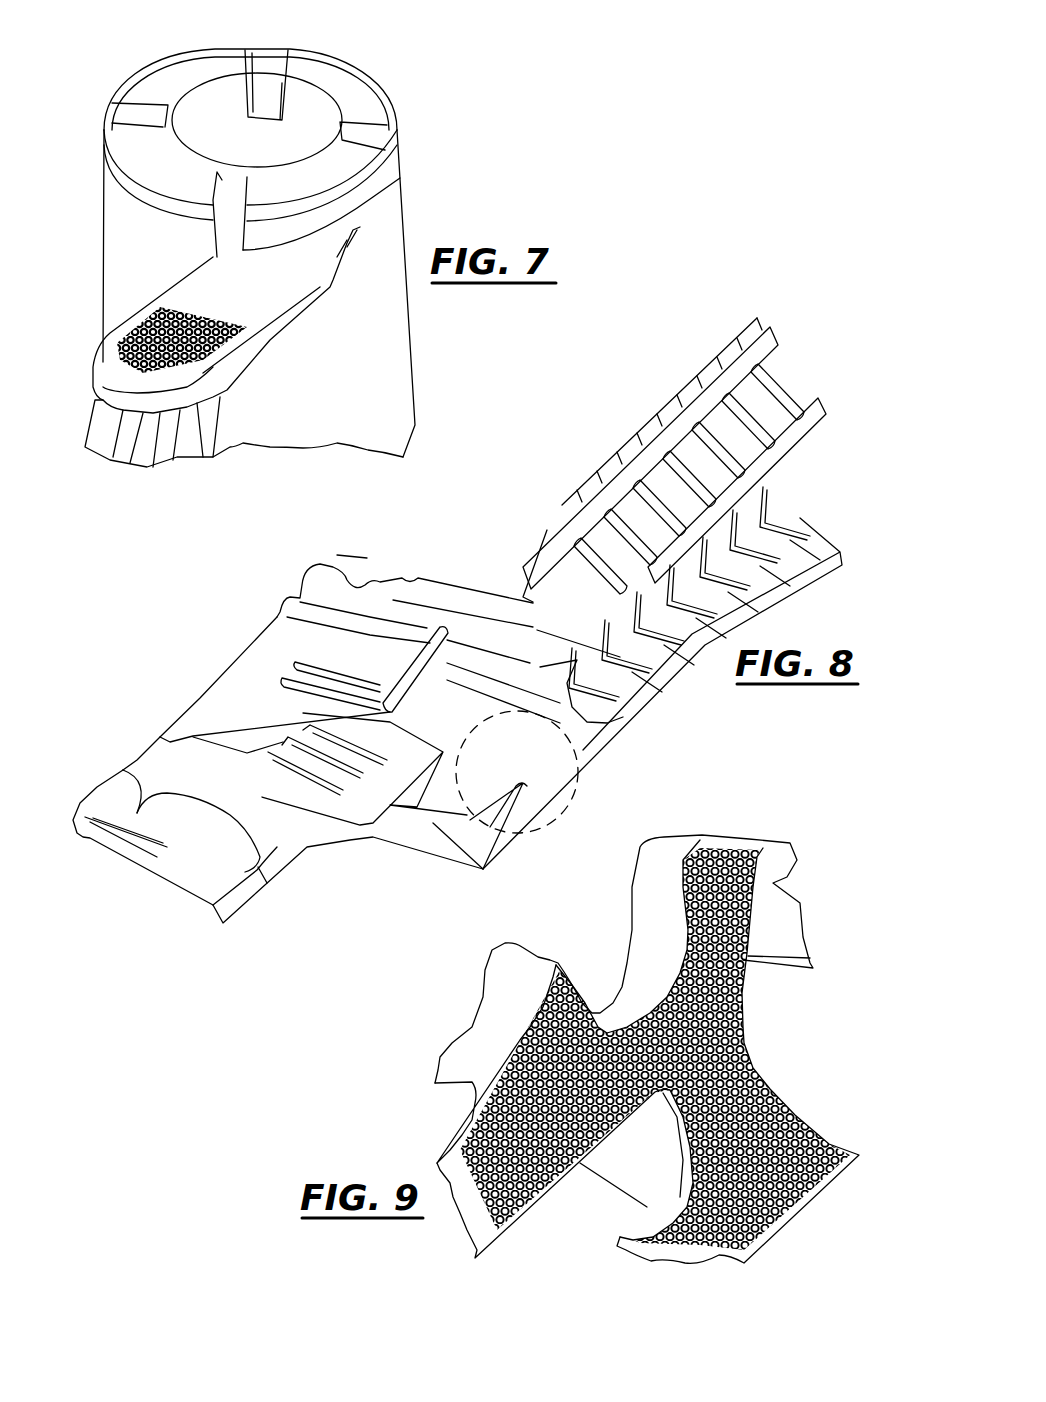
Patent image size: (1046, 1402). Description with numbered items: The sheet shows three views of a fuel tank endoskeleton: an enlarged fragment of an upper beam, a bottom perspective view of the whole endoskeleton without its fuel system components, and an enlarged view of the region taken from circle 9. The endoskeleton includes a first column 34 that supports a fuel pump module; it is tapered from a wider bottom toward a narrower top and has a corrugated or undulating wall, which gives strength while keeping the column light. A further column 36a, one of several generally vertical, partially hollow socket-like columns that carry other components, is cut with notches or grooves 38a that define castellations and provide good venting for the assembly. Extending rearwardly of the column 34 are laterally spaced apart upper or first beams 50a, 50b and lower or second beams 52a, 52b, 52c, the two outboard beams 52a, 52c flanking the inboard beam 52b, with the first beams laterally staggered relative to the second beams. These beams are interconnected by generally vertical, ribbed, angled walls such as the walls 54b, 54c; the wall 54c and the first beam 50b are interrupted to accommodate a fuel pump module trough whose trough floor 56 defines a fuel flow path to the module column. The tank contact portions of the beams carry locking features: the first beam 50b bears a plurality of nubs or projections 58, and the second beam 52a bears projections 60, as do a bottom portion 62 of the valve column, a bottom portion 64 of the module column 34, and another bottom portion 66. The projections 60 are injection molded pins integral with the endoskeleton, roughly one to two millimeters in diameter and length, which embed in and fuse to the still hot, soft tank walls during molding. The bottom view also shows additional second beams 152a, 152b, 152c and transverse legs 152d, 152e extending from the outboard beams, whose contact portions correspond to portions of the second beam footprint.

In FIG. 8, the first column 34 is at (395, 542).
In FIG. 7, the column 36a is at (88, 265).
In FIG. 7, the groove 38a is at (127, 110).
In FIG. 8, the first beam 50a is at (173, 703).
In FIG. 7, the first beam 50b is at (202, 320).
In FIG. 8, the second beam 52a is at (470, 860).
In FIG. 9, the second beam 52a is at (626, 1267).
In FIG. 8, the second beam 52b is at (310, 888).
In FIG. 8, the second beam 52c is at (398, 732).
In FIG. 8, the wall 54b is at (172, 861).
In FIG. 8, the wall 54c is at (253, 714).
In FIG. 8, the trough floor 56 is at (170, 748).
In FIG. 7, the projections 58 is at (208, 300).
In FIG. 9, the projections 60 is at (761, 858).
In FIG. 9, the bottom portion of the valve column 62 is at (753, 1077).
In FIG. 9, the bottom portion of the module column 64 is at (690, 947).
In FIG. 9, the bottom portion 66 is at (494, 1098).
In FIG. 8, the circle 9 is at (596, 752).
In FIG. 8, the second beam 152a is at (850, 552).
In FIG. 8, the second beam 152b is at (820, 395).
In FIG. 8, the second beam 152c is at (772, 322).
In FIG. 8, the transverse leg 152d is at (527, 598).
In FIG. 8, the transverse leg 152e is at (593, 697).